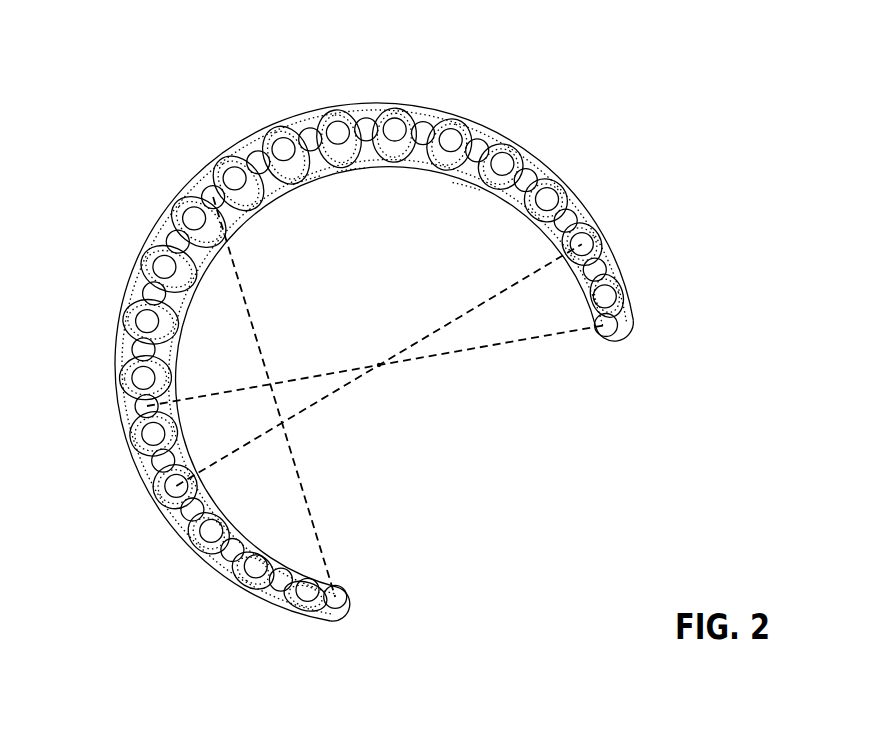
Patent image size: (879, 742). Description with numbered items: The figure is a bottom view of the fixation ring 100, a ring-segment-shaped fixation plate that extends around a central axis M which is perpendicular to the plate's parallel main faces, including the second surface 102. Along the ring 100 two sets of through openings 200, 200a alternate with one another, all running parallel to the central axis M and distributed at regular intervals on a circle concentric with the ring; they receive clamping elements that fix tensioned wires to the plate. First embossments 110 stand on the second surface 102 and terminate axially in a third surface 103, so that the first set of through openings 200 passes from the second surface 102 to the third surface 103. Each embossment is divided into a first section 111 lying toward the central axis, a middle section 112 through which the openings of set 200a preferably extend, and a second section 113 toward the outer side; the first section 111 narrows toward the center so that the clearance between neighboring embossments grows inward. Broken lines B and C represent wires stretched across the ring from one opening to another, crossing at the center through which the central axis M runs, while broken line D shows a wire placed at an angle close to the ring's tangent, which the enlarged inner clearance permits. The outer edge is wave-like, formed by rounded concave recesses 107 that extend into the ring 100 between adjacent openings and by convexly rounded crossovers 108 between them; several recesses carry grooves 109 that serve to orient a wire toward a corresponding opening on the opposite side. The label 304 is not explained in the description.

The fixation ring 100 is at (612, 347).
The second surface 102 is at (525, 162).
The third surface 103 is at (552, 190).
The rounded recess 107 is at (290, 128).
The crossover 108 is at (270, 132).
The groove 109 is at (484, 128).
The first embossment 110 is at (292, 170).
The first section 111 is at (347, 160).
The middle section 112 is at (348, 118).
The second section 113 is at (333, 115).
The first set of through openings 200 is at (602, 292).
The second set of through openings 200a is at (590, 272).
The inner contour 304 is at (462, 170).
The wire B is at (512, 342).
The wire C is at (472, 310).
The wire D is at (310, 513).
The central axis M is at (379, 365).